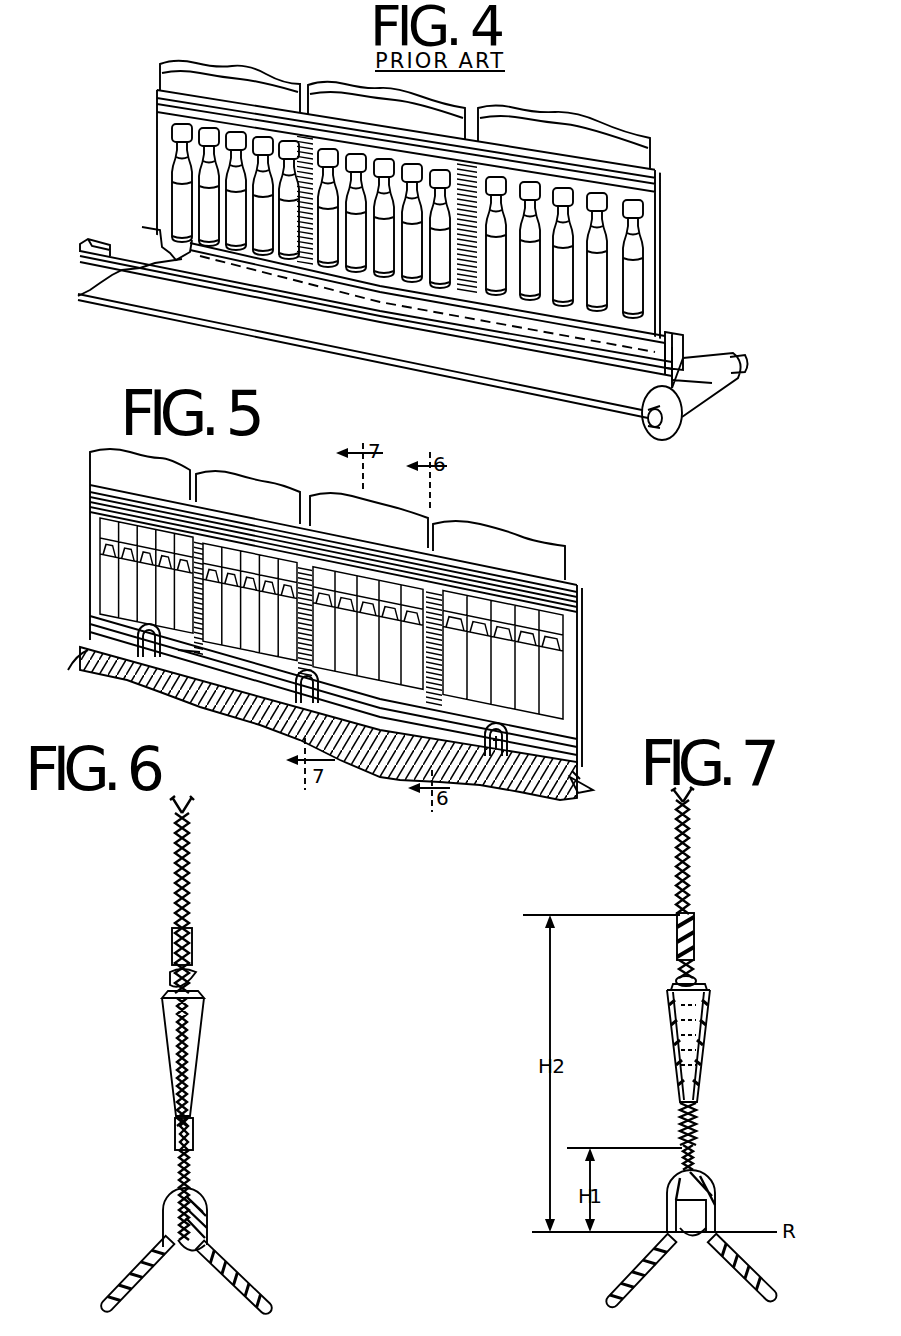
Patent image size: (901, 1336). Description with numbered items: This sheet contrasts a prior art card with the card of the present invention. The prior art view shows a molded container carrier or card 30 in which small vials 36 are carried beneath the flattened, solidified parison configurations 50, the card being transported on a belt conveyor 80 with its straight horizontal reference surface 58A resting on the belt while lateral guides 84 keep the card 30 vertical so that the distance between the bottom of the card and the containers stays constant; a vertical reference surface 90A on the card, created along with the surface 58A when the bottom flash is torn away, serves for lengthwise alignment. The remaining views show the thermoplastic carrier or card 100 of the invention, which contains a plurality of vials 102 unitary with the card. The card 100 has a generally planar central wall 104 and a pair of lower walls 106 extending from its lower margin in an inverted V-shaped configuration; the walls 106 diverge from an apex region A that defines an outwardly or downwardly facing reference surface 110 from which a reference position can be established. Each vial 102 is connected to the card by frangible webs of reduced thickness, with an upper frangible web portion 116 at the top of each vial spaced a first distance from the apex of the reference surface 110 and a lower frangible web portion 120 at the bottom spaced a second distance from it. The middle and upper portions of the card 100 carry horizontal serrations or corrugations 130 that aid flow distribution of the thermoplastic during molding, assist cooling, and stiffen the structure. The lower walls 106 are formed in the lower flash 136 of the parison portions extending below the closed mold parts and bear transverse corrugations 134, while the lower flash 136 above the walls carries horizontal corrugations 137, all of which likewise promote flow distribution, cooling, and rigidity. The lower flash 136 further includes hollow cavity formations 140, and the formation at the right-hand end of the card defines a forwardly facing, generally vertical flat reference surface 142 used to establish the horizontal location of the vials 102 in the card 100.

In FIG. 4, the container carrier or card 30 is at (672, 136).
In FIG. 4, the vials 36 is at (632, 262).
In FIG. 4, the flattened, solidified parison configuration 50 is at (232, 71).
In FIG. 4, the horizontal reference surface 58A is at (172, 258).
In FIG. 4, the belt conveyor 80 is at (716, 418).
In FIG. 4, the lateral guides 84 is at (676, 332).
In FIG. 4, the vertical reference surface 90A is at (158, 232).
In FIG. 5, the thermoplastic carrier or card 100 is at (598, 590).
In FIG. 6, the thermoplastic carrier or card 100 is at (210, 864).
In FIG. 7, the thermoplastic carrier or card 100 is at (716, 843).
In FIG. 5, the vials 102 is at (550, 676).
In FIG. 6, the vials 102 is at (195, 1047).
In FIG. 7, the vials 102 is at (707, 1037).
In FIG. 5, the central wall 104 is at (562, 734).
In FIG. 6, the central wall 104 is at (204, 1155).
In FIG. 7, the central wall 104 is at (705, 1154).
In FIG. 5, the lower walls 106 is at (578, 793).
In FIG. 6, the lower walls 106 is at (137, 1282).
In FIG. 7, the lower walls 106 is at (627, 1268).
In FIG. 6, the reference surface 110 is at (207, 1242).
In FIG. 7, the reference surface 110 is at (712, 1220).
In FIG. 7, the upper frangible web portion 116 is at (693, 912).
In FIG. 7, the lower frangible web portion 120 is at (698, 1140).
In FIG. 5, the horizontal serrations or corrugations 130 is at (578, 614).
In FIG. 6, the horizontal serrations or corrugations 130 is at (188, 892).
In FIG. 7, the horizontal serrations or corrugations 130 is at (688, 866).
In FIG. 5, the transverse corrugations 134 is at (134, 648).
In FIG. 5, the lower flash 136 is at (86, 667).
In FIG. 5, the horizontal corrugations 137 is at (201, 649).
In FIG. 6, the horizontal corrugations 137 is at (206, 1206).
In FIG. 5, the hollow cavity formations 140 is at (132, 645).
In FIG. 6, the hollow cavity formations 140 is at (170, 1218).
In FIG. 7, the hollow cavity formations 140 is at (672, 1203).
In FIG. 5, the forwardly facing flat reference surface 142 is at (496, 742).
In FIG. 5, the apex region A is at (578, 771).
In FIG. 6, the apex region A is at (208, 1222).